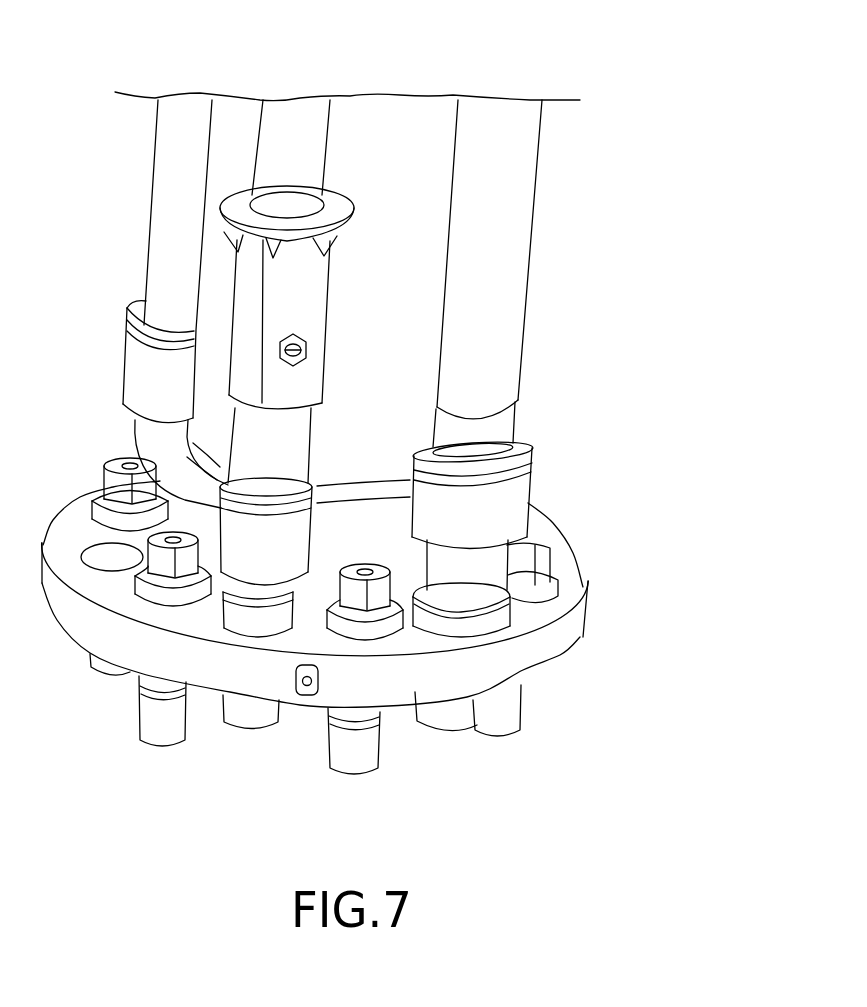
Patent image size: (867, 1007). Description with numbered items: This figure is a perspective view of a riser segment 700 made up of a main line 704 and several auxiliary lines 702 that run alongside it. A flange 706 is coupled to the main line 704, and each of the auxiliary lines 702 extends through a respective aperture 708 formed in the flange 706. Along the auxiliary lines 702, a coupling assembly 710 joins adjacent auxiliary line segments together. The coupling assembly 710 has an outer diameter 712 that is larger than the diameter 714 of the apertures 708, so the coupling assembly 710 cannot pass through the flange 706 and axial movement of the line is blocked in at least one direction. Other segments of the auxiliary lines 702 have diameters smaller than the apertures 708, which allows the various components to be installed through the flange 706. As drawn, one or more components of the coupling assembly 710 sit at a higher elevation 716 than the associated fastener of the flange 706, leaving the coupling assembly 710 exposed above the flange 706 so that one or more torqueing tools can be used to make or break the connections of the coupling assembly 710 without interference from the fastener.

The riser segment 700 is at (668, 280).
The auxiliary lines 702 is at (303, 120).
The main line 704 is at (410, 140).
The flange 706 is at (583, 613).
The apertures 708 is at (520, 632).
The coupling assembly 710 is at (570, 468).
The outer diameter 712 is at (545, 494).
The diameter 714 is at (535, 575).
The higher elevation 716 is at (418, 612).